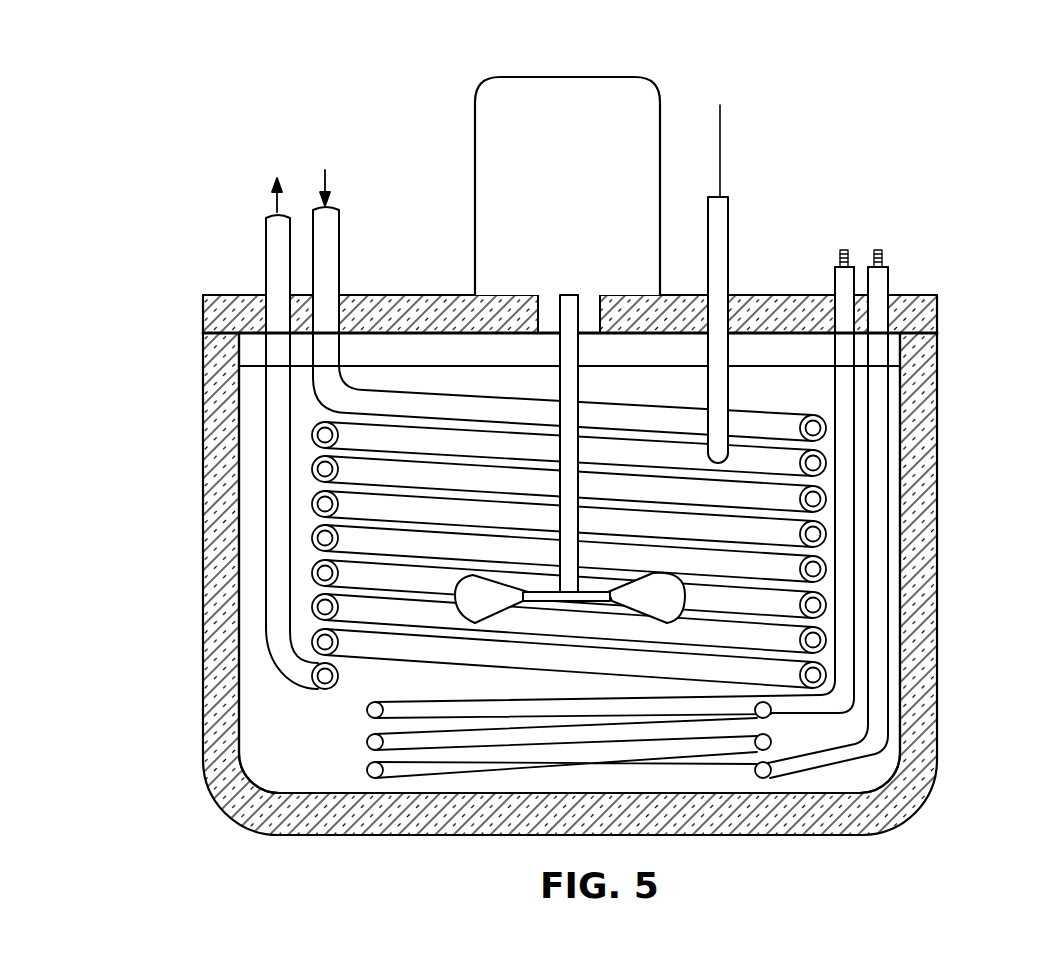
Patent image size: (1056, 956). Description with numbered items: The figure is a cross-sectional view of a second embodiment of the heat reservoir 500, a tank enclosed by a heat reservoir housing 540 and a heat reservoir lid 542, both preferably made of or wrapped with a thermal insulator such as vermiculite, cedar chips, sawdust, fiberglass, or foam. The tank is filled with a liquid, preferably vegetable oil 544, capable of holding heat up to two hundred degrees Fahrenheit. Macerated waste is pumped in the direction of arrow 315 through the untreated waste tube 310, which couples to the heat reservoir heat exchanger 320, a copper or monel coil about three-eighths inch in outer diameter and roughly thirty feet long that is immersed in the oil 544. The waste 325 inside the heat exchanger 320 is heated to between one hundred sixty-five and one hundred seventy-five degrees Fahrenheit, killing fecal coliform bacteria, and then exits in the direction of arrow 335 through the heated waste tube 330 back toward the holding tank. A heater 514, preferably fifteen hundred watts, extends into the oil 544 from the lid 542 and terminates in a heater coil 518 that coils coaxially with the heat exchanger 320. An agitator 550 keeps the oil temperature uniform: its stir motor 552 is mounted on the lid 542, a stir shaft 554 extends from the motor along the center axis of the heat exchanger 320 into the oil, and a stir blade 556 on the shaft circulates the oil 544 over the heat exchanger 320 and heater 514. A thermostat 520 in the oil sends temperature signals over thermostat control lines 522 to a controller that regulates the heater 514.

The heat reservoir 500 is at (167, 128).
The untreated waste tube 310 is at (339, 246).
The arrow 315 is at (323, 172).
The heat reservoir heat exchanger 320 is at (320, 500).
The waste 325 is at (325, 435).
The heated waste tube 330 is at (266, 245).
The arrow 335 is at (278, 181).
The heater 514 is at (888, 270).
The heater coil 518 is at (367, 712).
The thermostat 520 is at (728, 258).
The thermostat control lines 522 is at (722, 148).
The heat reservoir housing 540 is at (940, 607).
The heat reservoir lid 542 is at (940, 308).
The oil 544 is at (258, 743).
The agitator 550 is at (523, 372).
The stir motor 552 is at (586, 193).
The stir shaft 554 is at (580, 383).
The stir blade 556 is at (453, 606).